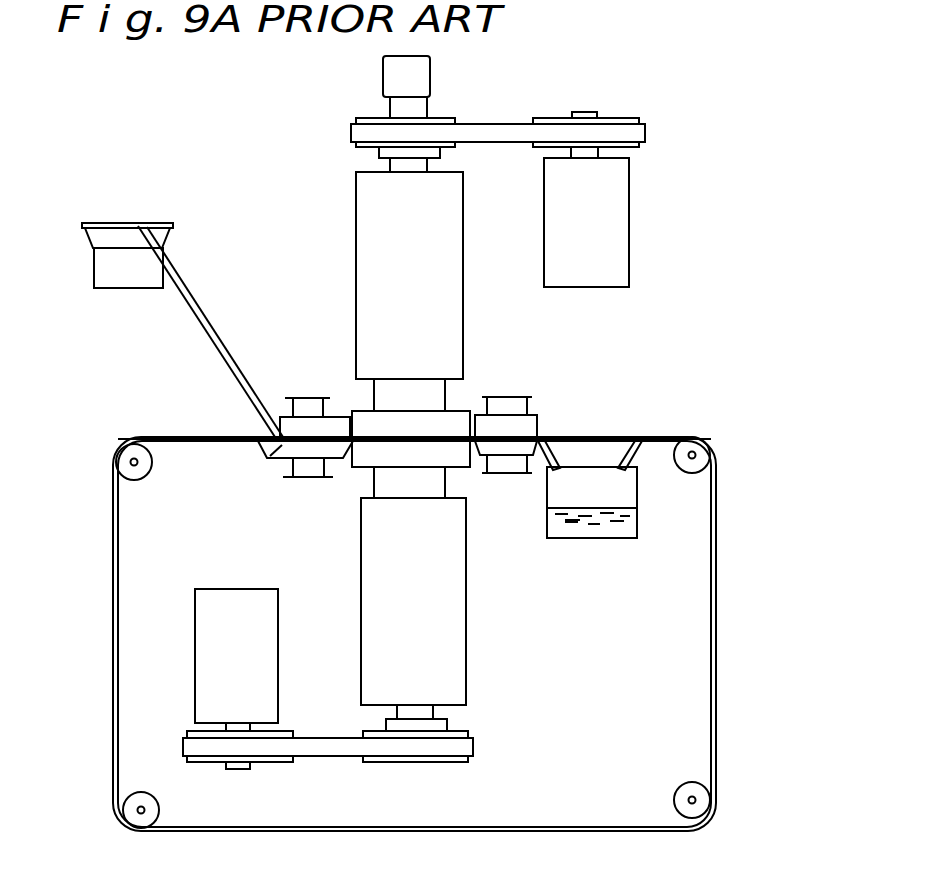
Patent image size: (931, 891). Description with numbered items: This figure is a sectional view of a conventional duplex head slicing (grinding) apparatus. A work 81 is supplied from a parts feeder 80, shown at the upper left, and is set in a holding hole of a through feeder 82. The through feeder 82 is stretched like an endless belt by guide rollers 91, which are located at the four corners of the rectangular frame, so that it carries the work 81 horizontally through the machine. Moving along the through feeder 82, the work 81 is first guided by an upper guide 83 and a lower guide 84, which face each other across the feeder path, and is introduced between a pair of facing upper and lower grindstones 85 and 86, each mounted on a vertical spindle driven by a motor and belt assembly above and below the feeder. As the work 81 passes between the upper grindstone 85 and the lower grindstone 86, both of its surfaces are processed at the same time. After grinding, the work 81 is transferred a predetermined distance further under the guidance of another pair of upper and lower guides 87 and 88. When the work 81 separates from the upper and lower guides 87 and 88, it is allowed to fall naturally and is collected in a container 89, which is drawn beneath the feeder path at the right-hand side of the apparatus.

The parts feeder 80 is at (158, 236).
The work 81 is at (278, 458).
The through feeder 82 is at (200, 438).
The upper guide 83 is at (333, 425).
The lower guide 84 is at (340, 450).
The upper grindstone 85 is at (460, 422).
The lower grindstone 86 is at (457, 460).
The upper guide 87 is at (525, 426).
The lower guide 88 is at (517, 470).
The container 89 is at (615, 538).
The guide rollers 91 is at (118, 466).